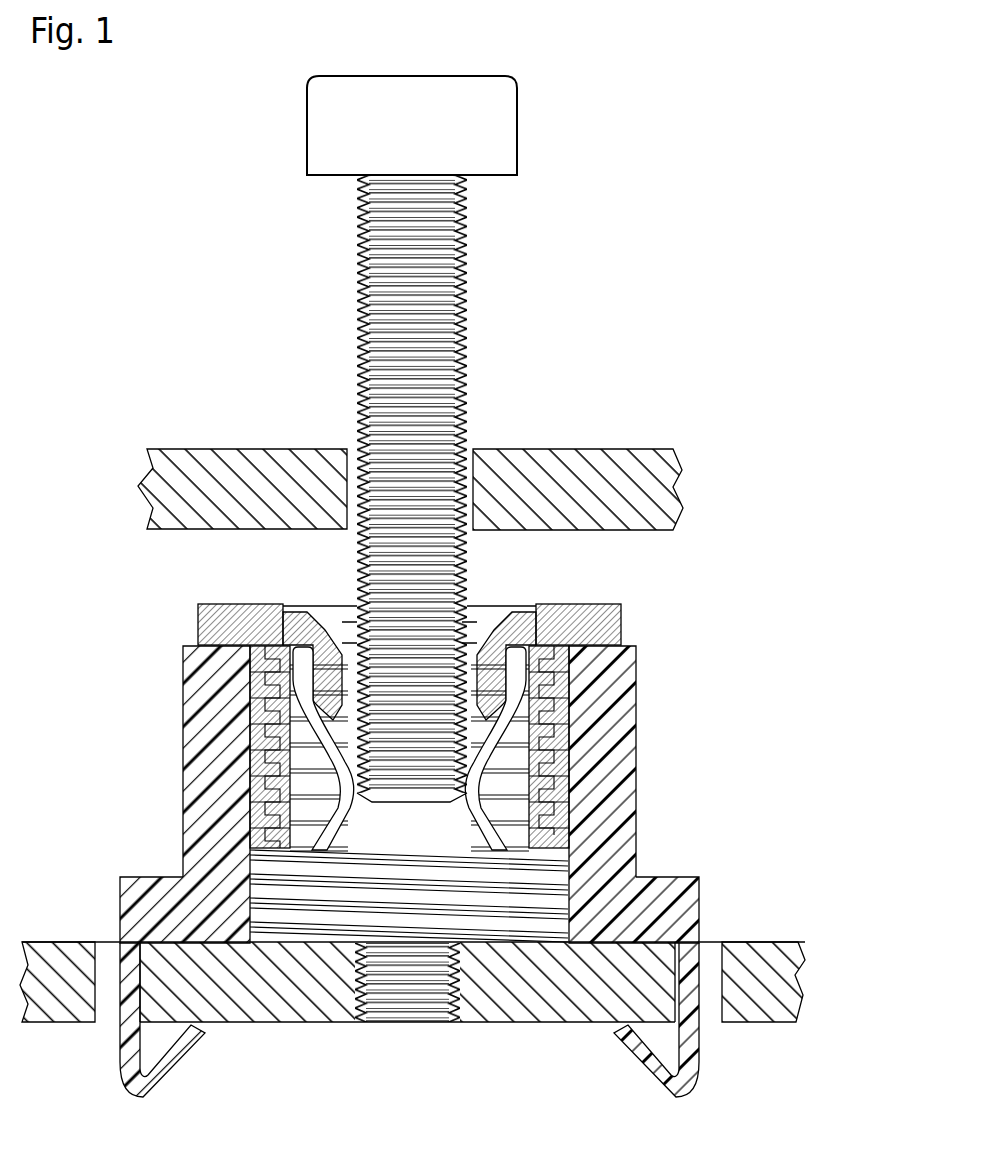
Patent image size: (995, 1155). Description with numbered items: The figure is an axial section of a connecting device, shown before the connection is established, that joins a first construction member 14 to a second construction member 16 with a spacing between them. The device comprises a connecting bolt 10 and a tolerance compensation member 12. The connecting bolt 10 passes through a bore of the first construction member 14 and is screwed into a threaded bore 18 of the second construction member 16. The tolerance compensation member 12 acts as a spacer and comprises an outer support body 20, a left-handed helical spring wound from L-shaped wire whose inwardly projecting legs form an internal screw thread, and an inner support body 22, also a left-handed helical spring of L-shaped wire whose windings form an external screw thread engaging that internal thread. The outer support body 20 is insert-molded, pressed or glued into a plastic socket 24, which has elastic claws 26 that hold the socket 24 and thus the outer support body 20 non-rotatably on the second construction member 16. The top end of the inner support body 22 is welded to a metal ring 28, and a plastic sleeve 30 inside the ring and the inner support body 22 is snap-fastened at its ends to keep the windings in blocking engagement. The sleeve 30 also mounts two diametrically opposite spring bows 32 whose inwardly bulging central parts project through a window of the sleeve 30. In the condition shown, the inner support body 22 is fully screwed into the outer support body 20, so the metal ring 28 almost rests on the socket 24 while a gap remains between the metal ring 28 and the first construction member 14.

The connecting bolt 10 is at (548, 268).
The tolerance compensation member 12 is at (126, 690).
The first construction member 14 is at (675, 480).
The second construction member 16 is at (752, 1008).
The threaded bore 18 is at (440, 1018).
The outer support body 20 is at (250, 888).
The inner support body 22 is at (322, 808).
The plastic socket 24 is at (185, 790).
The elastic claws 26 is at (630, 1065).
The metal ring 28 is at (622, 620).
The plastic sleeve 30 is at (520, 620).
The spring bows 32 is at (480, 745).